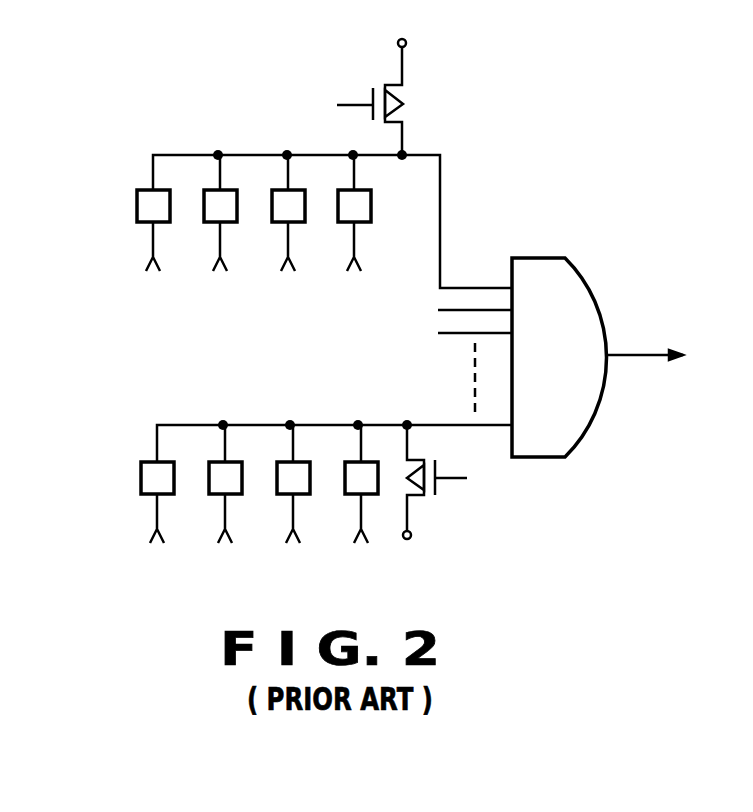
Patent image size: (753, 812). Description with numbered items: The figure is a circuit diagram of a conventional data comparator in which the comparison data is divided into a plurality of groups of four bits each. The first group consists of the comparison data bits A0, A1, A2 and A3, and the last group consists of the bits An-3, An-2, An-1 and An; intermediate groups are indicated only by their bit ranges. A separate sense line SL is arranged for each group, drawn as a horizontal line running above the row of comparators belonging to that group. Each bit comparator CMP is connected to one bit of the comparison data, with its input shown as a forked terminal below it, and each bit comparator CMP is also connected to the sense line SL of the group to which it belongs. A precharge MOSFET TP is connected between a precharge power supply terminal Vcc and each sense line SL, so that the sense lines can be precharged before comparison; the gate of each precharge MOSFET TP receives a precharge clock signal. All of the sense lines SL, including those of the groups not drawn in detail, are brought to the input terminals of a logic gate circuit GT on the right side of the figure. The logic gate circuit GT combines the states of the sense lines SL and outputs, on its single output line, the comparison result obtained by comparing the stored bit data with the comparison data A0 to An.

The bit comparator CMP is at (137, 205).
The sense line SL is at (241, 153).
The precharge MOSFET TP is at (407, 107).
The logic gate circuit GT is at (588, 302).
The precharge power supply terminal Vcc is at (398, 39).
The comparison data bit A0 is at (153, 262).
The comparison data bit A1 is at (219, 262).
The comparison data bit A2 is at (290, 262).
The comparison data bit A3 is at (356, 262).
The comparison data bit An-3 is at (157, 535).
The comparison data bit An-2 is at (223, 535).
The comparison data bit An-1 is at (290, 535).
The comparison data bit An is at (355, 533).